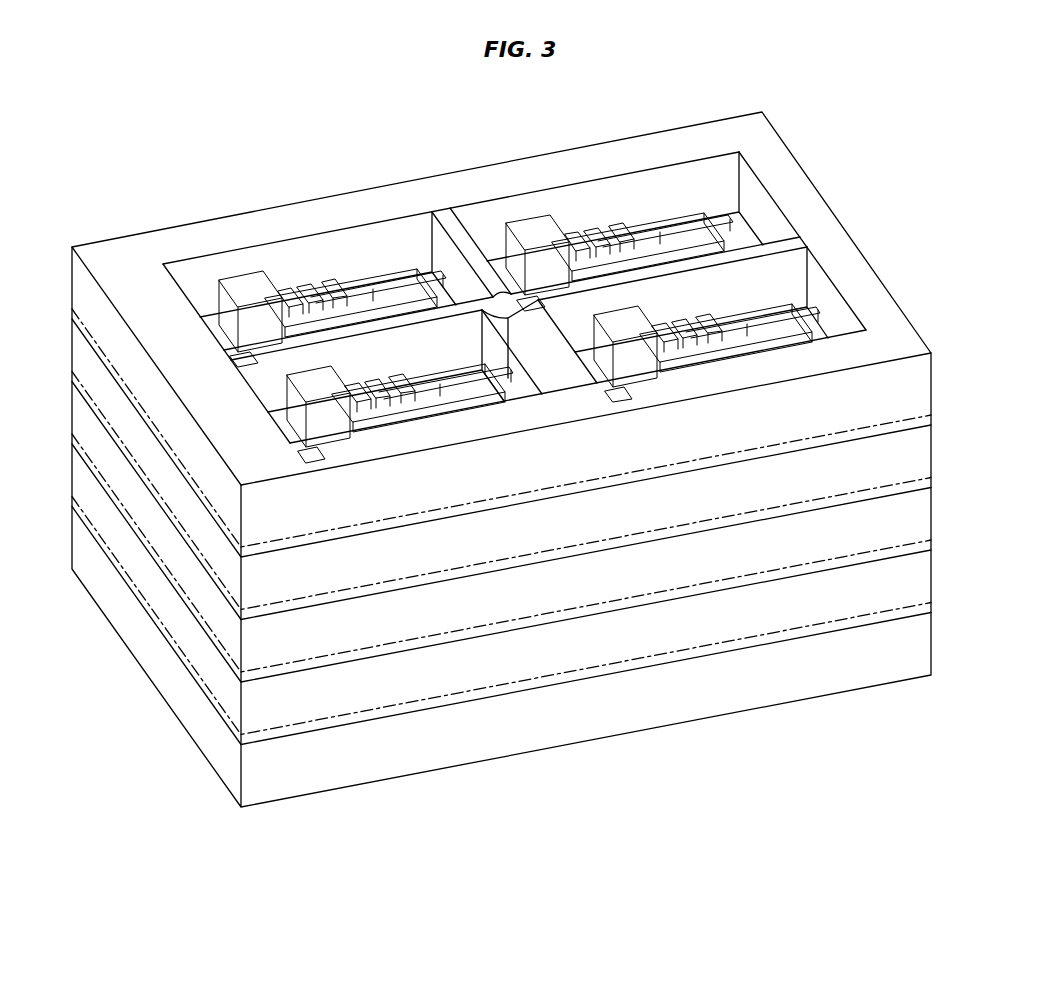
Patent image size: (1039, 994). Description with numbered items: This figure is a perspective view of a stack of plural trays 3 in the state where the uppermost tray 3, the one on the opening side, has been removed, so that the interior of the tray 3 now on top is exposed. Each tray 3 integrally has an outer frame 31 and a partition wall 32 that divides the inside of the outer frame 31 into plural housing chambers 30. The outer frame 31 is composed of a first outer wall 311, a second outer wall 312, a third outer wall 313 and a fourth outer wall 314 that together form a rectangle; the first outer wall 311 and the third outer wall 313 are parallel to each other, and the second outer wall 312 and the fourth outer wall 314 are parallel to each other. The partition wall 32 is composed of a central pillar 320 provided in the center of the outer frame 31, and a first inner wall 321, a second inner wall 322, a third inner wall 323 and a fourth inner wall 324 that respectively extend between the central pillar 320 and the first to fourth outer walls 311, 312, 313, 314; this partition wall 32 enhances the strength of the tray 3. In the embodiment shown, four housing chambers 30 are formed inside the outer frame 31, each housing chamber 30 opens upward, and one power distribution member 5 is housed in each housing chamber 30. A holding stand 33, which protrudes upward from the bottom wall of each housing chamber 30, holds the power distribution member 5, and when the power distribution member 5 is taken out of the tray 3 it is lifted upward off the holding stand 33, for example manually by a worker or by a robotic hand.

The tray 3 is at (922, 400).
The power distribution member 5 is at (343, 285).
The housing chamber 30 is at (275, 267).
The outer frame 31 is at (310, 193).
The first outer wall 311 is at (345, 202).
The second outer wall 312 is at (773, 168).
The third outer wall 313 is at (850, 357).
The fourth outer wall 314 is at (150, 280).
The partition wall 32 is at (555, 253).
The central pillar 320 is at (488, 297).
The first inner wall 321 is at (460, 230).
The second inner wall 322 is at (752, 250).
The third inner wall 323 is at (543, 352).
The fourth inner wall 324 is at (415, 320).
The holding stand 33 is at (297, 327).